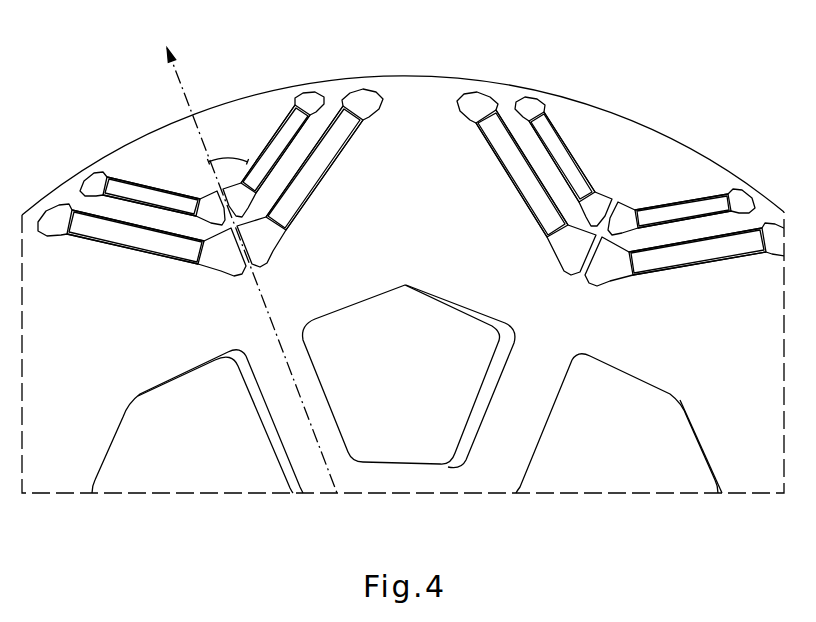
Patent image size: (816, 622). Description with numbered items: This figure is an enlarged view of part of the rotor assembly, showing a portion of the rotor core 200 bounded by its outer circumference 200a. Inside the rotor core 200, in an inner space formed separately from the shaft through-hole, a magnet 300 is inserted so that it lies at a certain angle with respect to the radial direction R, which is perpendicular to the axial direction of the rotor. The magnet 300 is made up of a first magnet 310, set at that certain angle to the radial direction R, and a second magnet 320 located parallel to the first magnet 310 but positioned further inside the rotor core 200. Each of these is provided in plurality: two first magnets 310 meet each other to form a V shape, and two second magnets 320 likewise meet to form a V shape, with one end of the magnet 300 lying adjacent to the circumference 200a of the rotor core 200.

The rotor core 200 is at (403, 257).
The circumference 200a is at (577, 100).
The magnet 300 is at (690, 153).
The first magnet 310 is at (683, 209).
The second magnet 320 is at (699, 250).
The radial direction R is at (181, 86).